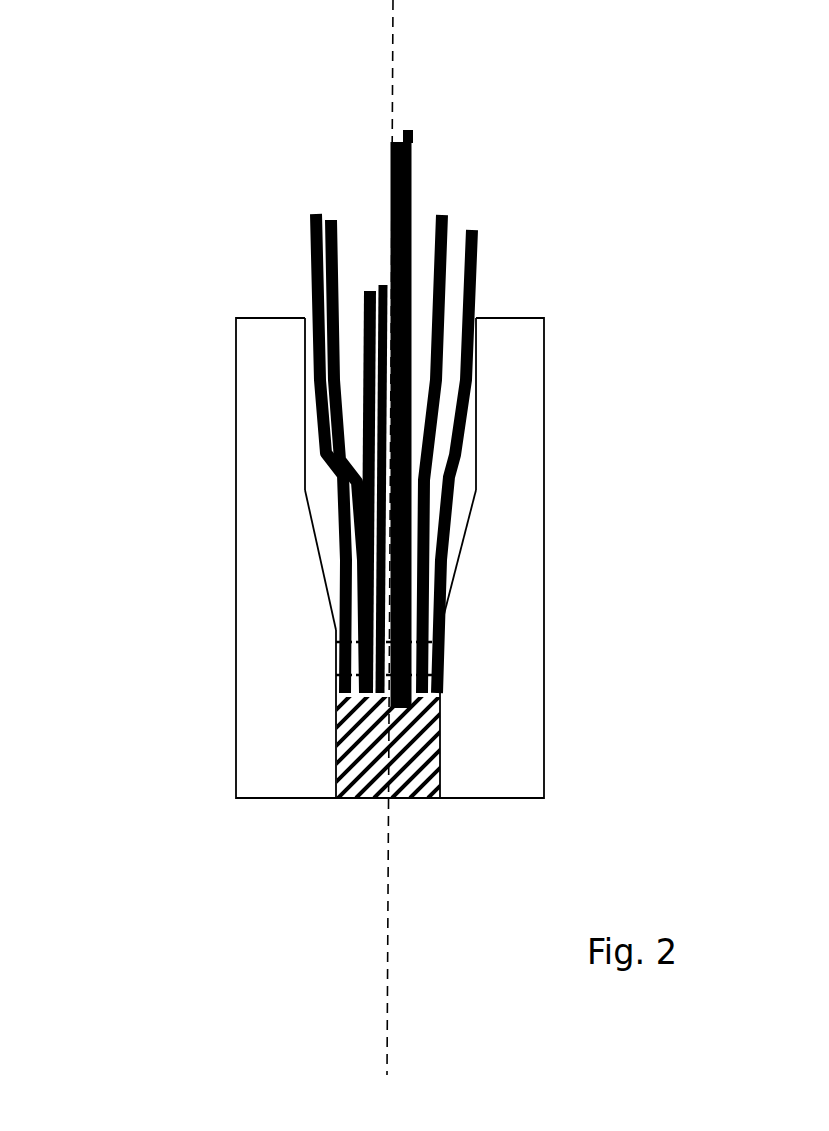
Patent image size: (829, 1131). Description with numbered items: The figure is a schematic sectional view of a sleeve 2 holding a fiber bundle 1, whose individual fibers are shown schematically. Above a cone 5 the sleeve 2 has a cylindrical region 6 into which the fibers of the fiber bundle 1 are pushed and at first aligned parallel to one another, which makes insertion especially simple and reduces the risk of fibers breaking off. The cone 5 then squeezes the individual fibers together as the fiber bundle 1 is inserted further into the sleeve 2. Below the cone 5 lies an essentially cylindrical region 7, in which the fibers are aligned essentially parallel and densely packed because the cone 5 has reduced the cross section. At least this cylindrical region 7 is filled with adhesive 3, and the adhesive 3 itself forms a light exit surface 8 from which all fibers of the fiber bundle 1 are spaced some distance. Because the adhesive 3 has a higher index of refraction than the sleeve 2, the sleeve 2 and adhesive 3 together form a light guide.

The fiber bundle 1 is at (412, 467).
The sleeve 2 is at (252, 637).
The adhesive 3 is at (345, 767).
The cone 5 is at (317, 540).
The cylindrical region 6 is at (305, 363).
The cylindrical region 7 is at (438, 743).
The light exit surface 8 is at (405, 800).